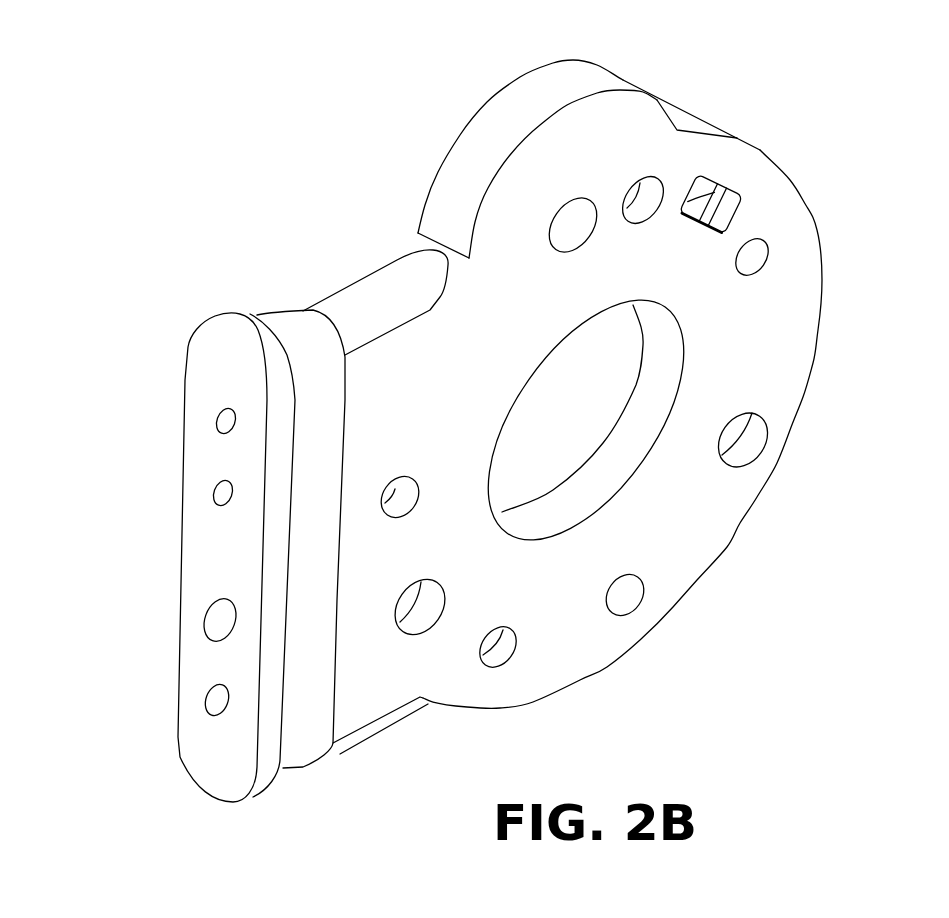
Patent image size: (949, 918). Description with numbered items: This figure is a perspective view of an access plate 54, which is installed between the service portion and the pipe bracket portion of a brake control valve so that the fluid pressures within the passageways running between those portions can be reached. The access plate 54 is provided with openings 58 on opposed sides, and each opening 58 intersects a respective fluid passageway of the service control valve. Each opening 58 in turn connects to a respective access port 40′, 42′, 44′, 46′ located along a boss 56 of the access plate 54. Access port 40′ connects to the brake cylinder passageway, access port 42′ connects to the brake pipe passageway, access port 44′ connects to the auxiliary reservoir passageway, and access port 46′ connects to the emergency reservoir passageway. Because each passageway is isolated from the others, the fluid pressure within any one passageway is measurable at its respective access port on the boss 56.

The access plate 54 is at (877, 168).
The boss 56 is at (206, 352).
The openings 58 is at (640, 190).
The access port 40′ is at (213, 700).
The access port 42′ is at (218, 627).
The access port 44′ is at (222, 495).
The access port 46′ is at (222, 420).